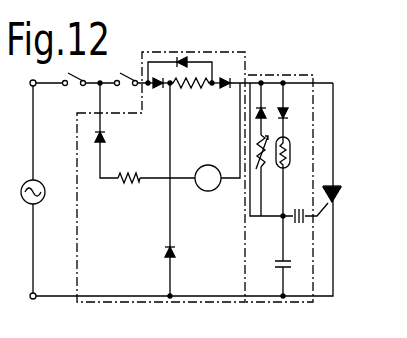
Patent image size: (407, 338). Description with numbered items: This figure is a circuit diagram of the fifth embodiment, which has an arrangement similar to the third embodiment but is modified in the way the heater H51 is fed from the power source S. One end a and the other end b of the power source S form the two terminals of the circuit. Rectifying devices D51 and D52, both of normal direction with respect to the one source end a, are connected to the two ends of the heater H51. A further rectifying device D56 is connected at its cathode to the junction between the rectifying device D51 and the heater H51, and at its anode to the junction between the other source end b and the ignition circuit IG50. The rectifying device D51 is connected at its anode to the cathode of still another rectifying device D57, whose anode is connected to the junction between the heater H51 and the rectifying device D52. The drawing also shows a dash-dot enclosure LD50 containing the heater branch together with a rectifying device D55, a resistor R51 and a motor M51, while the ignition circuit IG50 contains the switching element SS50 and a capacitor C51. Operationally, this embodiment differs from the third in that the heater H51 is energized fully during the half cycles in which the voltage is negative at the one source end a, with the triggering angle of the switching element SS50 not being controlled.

The one end of the power source a is at (24, 83).
The other source end b is at (24, 296).
The power source S is at (23, 192).
The rectifying device D51 is at (149, 79).
The rectifying device D57 is at (181, 59).
The heater H51 is at (188, 88).
The rectifying device D52 is at (229, 78).
The load circuit LD50 is at (233, 51).
The ignition circuit IG50 is at (322, 58).
The diode D55 is at (118, 137).
The resistor R51 is at (127, 191).
The motor M51 is at (212, 191).
The rectifying device D56 is at (191, 255).
The switching element SS50 is at (360, 189).
The capacitor C51 is at (294, 265).